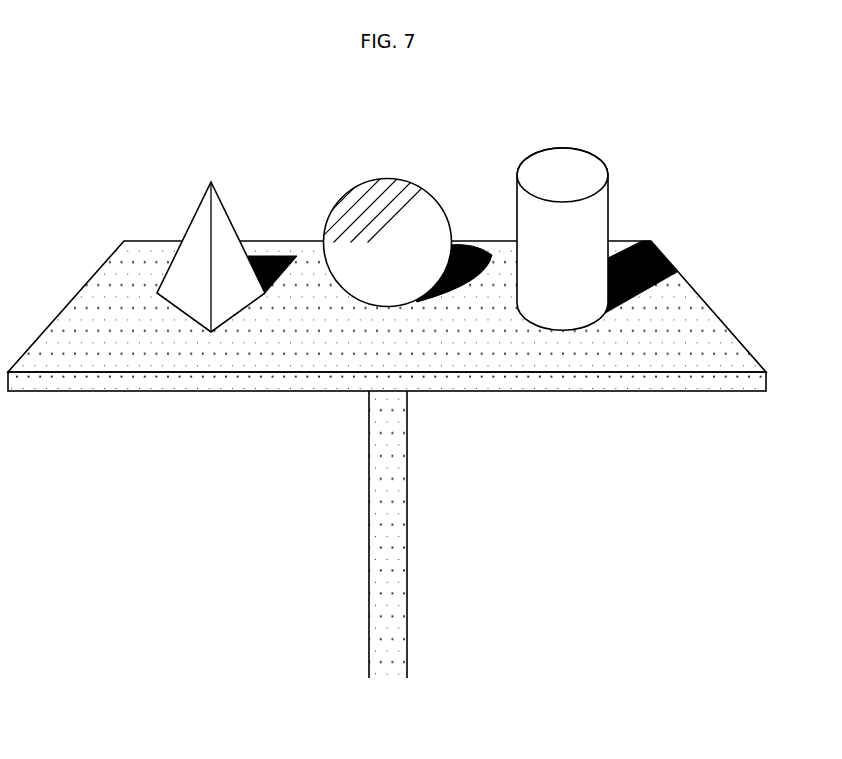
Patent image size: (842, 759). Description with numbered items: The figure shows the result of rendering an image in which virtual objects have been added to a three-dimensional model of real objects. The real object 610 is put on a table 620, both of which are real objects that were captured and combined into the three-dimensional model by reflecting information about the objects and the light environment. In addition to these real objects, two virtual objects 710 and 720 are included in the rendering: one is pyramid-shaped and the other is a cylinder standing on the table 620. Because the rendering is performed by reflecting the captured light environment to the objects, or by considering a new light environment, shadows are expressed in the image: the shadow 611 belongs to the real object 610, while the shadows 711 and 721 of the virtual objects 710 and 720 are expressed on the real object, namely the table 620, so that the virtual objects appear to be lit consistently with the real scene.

The object 610 is at (388, 179).
The shadow 611 is at (465, 242).
The table 620 is at (662, 353).
The virtual object 710 is at (211, 182).
The shadow 711 is at (266, 255).
The virtual object 720 is at (562, 148).
The shadow 721 is at (657, 246).